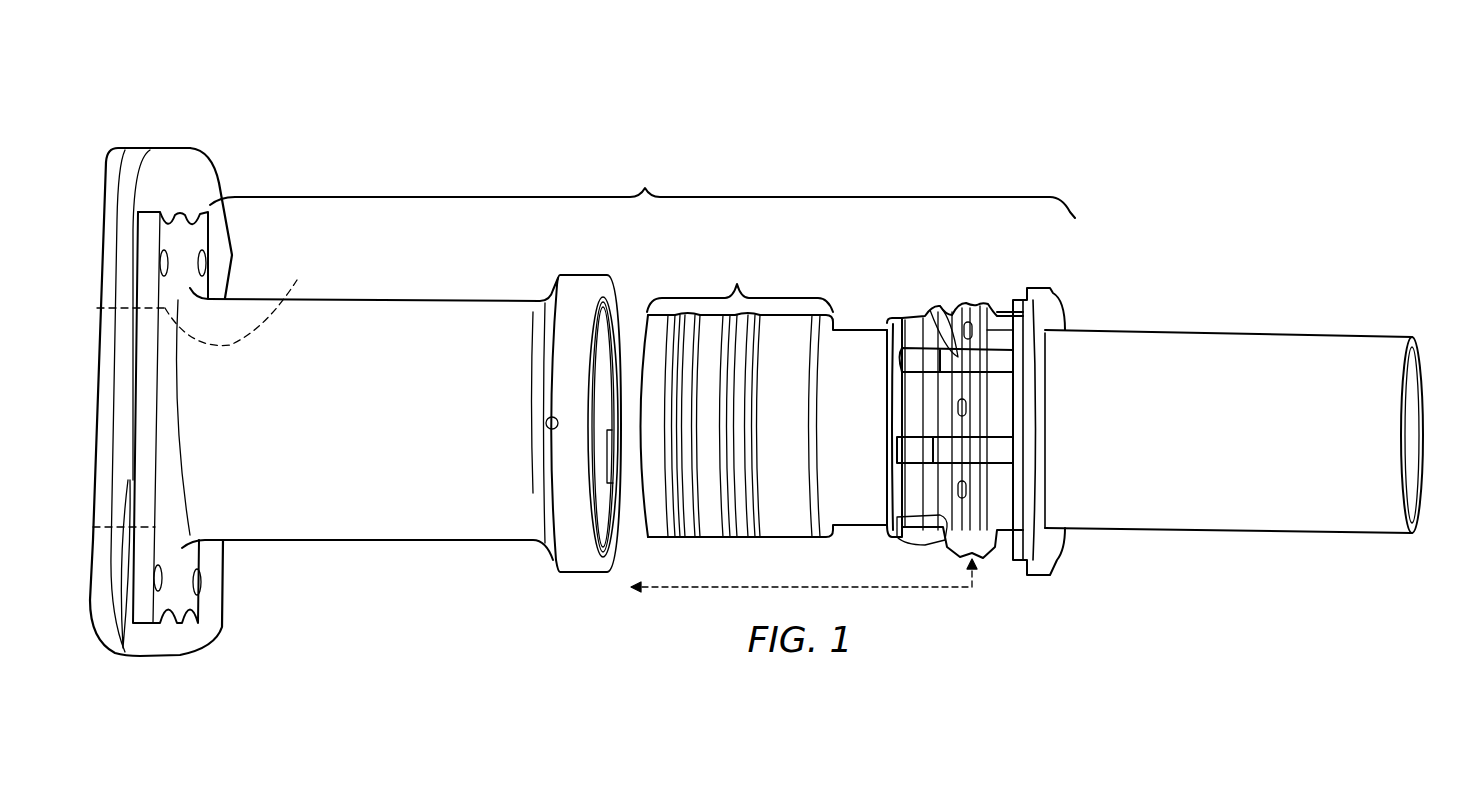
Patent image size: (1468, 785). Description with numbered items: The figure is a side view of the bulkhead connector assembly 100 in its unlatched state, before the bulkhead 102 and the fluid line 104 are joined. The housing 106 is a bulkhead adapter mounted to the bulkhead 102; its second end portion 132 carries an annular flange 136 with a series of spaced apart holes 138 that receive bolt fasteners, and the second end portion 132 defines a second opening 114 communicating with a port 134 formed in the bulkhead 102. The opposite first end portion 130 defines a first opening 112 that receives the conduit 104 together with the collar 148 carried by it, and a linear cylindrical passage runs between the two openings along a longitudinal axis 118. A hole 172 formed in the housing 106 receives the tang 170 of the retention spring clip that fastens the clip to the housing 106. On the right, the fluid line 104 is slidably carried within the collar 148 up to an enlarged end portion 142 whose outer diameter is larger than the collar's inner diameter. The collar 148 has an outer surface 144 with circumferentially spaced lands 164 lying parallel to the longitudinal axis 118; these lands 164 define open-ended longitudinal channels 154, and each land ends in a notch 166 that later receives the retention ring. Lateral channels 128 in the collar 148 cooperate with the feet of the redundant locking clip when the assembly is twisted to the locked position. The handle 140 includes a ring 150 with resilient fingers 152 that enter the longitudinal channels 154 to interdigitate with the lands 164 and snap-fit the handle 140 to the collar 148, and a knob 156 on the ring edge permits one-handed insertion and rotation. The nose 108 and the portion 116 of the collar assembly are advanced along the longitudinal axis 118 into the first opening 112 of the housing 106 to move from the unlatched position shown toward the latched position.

The bulkhead connector assembly 100 is at (642, 191).
The bulkhead 102 is at (97, 182).
The fluid line 104 is at (1388, 333).
The housing 106 is at (376, 300).
The nose 108 is at (893, 320).
The first opening 112 is at (615, 537).
The second opening 114 is at (122, 640).
The portion 116 is at (890, 537).
The longitudinal axis 118 is at (1407, 433).
The lateral channels 128 is at (992, 332).
The first end portion 130 is at (546, 300).
The second end portion 132 is at (226, 297).
The port 134 is at (250, 300).
The annular flange 136 is at (196, 232).
The holes 138 is at (202, 588).
The handle 140 is at (1065, 305).
The enlarged end portion 142 is at (764, 397).
The outer surface 144 is at (972, 325).
The collar 148 is at (983, 500).
The ring 150 is at (1040, 577).
The resilient fingers 152 is at (980, 528).
The longitudinal channels 154 is at (942, 350).
The knob 156 is at (1042, 288).
The lands 164 is at (942, 330).
The notch 166 is at (948, 540).
The tang 170 is at (548, 427).
The hole 172 is at (548, 418).